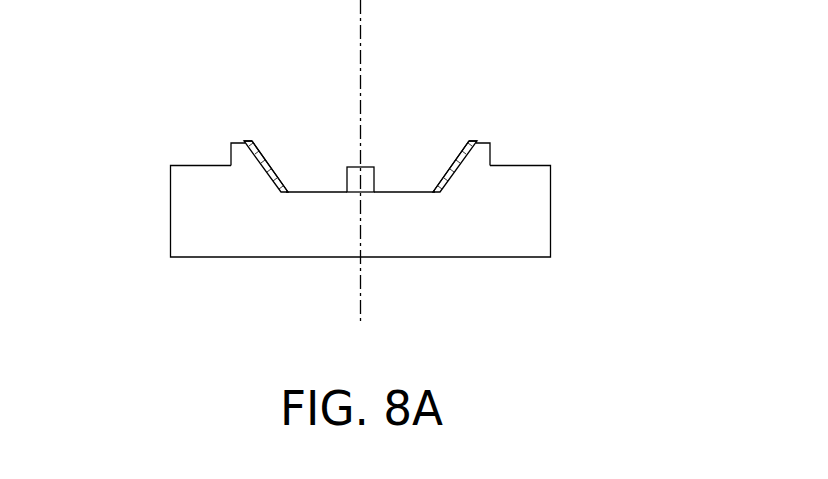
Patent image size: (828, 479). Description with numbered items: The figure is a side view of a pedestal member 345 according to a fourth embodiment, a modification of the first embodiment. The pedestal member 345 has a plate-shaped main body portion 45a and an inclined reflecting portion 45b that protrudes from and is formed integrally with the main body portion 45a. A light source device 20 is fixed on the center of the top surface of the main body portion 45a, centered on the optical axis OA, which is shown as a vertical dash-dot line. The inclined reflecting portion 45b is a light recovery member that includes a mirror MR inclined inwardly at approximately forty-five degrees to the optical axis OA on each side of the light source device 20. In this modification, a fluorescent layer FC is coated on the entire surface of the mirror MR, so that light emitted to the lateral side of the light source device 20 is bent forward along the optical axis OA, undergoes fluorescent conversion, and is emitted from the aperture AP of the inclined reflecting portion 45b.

The pedestal member 345 is at (356, 170).
The main body portion 45a is at (195, 223).
The inclined reflecting portion 45b is at (247, 185).
The mirror MR is at (252, 143).
The fluorescent layer FC is at (264, 156).
The aperture AP is at (283, 133).
The light source device 20 is at (374, 180).
The optical axis OA is at (361, 47).